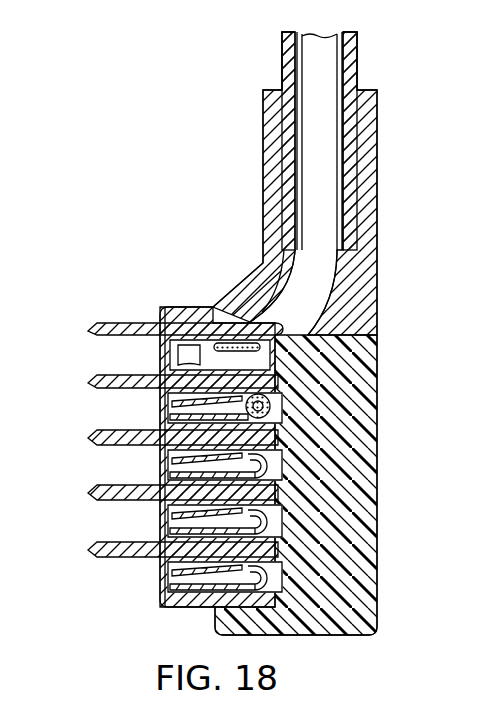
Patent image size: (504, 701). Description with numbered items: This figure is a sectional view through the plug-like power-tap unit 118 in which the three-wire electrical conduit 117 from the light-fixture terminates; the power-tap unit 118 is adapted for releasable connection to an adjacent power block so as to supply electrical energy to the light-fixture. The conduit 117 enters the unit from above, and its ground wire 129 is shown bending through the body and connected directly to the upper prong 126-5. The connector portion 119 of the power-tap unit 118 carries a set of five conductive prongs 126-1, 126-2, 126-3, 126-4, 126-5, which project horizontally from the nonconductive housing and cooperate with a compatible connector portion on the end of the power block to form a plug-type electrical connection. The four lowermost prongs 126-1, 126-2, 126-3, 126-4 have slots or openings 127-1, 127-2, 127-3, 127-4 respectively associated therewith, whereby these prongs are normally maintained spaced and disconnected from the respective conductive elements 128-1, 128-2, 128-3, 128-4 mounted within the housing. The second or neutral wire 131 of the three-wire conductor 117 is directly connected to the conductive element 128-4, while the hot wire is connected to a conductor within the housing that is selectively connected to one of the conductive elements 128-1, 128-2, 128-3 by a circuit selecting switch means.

The three-wire electrical conduit 117 is at (358, 49).
The power-tap unit 118 is at (377, 473).
The connector portion 119 is at (117, 307).
The conductive prong 126-1 is at (97, 549).
The conductive prong 126-2 is at (97, 492).
The conductive prong 126-3 is at (97, 437).
The conductive prong 126-4 is at (97, 382).
The conductive prong 126-5 is at (97, 334).
The slot or opening 127-1 is at (176, 571).
The slot or opening 127-2 is at (176, 514).
The slot or opening 127-3 is at (176, 459).
The slot or opening 127-4 is at (176, 402).
The conductive element 128-1 is at (176, 585).
The conductive element 128-2 is at (172, 530).
The conductive element 128-3 is at (172, 474).
The conductive element 128-4 is at (172, 414).
The ground wire 129 is at (316, 281).
The neutral wire 131 is at (272, 407).